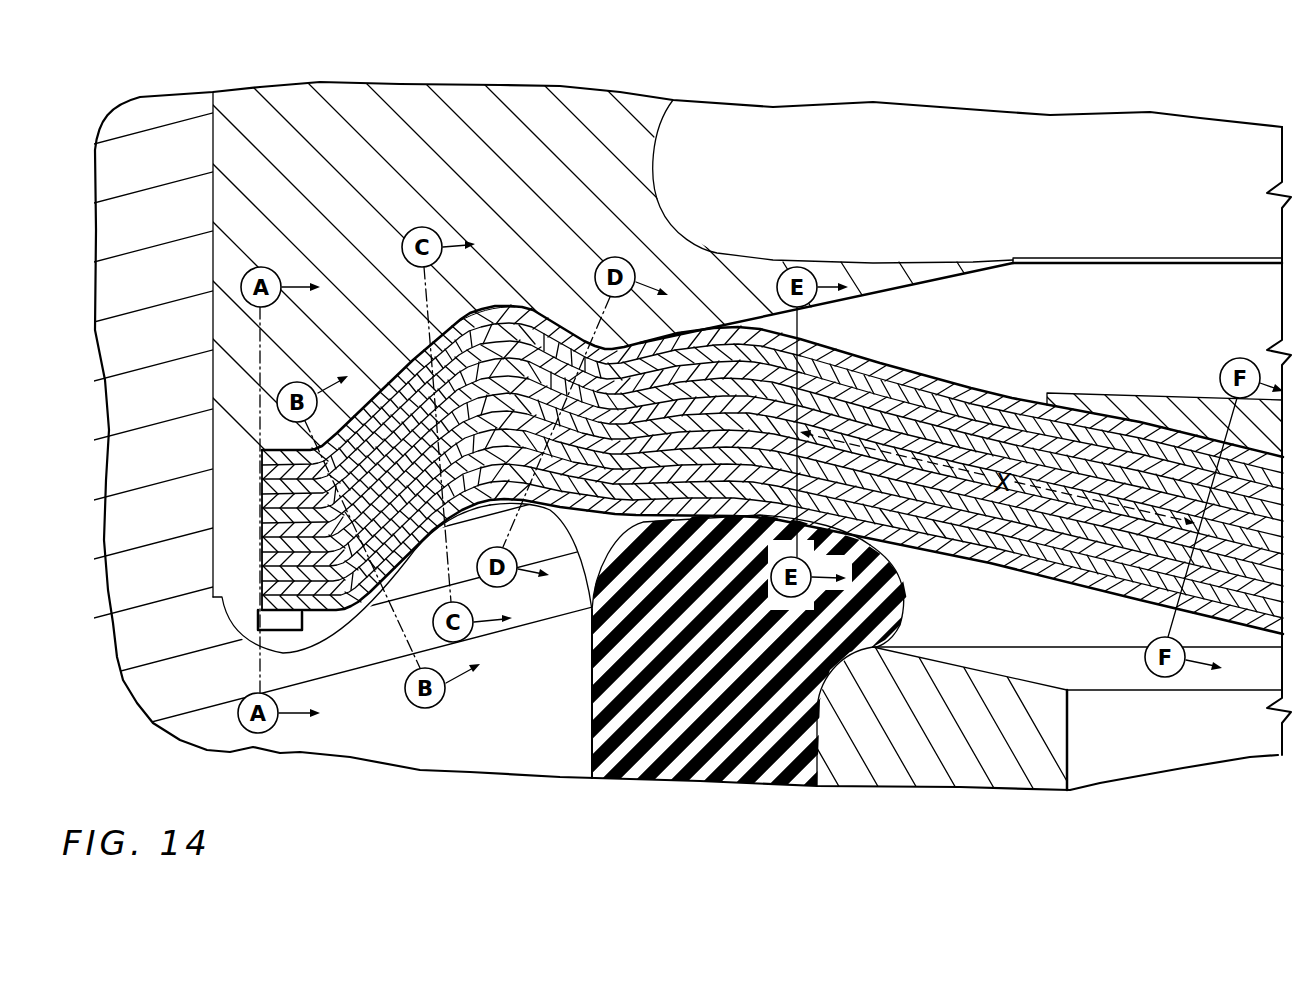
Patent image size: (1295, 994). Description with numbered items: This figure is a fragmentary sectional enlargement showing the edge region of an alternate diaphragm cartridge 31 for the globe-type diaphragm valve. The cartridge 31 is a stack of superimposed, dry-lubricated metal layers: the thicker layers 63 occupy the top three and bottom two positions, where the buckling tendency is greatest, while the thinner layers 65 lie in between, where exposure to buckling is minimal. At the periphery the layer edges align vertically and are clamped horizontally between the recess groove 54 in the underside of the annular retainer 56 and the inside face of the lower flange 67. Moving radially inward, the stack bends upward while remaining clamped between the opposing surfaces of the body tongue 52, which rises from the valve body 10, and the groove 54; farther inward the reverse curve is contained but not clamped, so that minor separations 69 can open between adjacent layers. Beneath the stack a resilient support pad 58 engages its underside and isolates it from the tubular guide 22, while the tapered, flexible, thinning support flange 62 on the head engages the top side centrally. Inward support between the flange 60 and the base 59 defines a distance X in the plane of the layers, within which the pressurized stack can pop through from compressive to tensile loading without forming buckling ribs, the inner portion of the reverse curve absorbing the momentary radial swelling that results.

The body 10 is at (413, 733).
The tubular guide 22 is at (917, 747).
The diaphragm cartridge 31 is at (976, 362).
The body tongue 52 is at (565, 550).
The recess groove 54 is at (488, 305).
The annular retainer 56 is at (308, 112).
The resilient support pad 58 is at (655, 745).
The base 59 is at (907, 598).
The flange 60 is at (883, 277).
The support flange 62 is at (1123, 410).
The layers 63 is at (265, 603).
The layers 65 is at (265, 573).
The lower flange 67 is at (293, 625).
The minor separations 69 is at (518, 318).